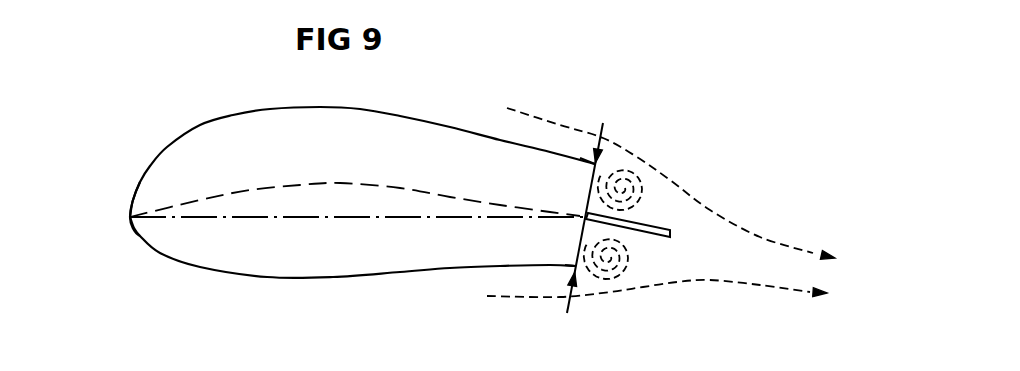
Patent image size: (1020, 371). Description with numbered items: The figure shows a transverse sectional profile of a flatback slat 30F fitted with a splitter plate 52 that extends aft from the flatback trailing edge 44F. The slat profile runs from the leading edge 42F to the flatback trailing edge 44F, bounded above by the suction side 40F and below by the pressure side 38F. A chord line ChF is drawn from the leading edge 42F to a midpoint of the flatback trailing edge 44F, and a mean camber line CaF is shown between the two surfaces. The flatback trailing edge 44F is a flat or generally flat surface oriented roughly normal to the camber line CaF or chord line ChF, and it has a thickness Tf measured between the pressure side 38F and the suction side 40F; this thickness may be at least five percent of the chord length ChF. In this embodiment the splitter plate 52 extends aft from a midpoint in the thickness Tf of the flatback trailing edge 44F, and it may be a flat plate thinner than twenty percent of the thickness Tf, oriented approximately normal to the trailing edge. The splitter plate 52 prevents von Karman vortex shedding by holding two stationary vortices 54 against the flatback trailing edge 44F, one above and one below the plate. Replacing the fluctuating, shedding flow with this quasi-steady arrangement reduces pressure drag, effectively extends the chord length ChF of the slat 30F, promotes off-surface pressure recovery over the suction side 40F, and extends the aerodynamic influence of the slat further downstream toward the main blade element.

The flatback slat 30F is at (128, 126).
The suction side 40F is at (418, 113).
The pressure side 38F is at (373, 278).
The leading edge 42F is at (130, 217).
The flatback trailing edge 44F is at (593, 188).
The mean camber line CaF is at (265, 188).
The chord line ChF is at (253, 220).
The thickness of the flatback trailing edge Tf is at (604, 130).
The splitter plate 52 is at (670, 234).
The stationary vortices 54 is at (650, 186).